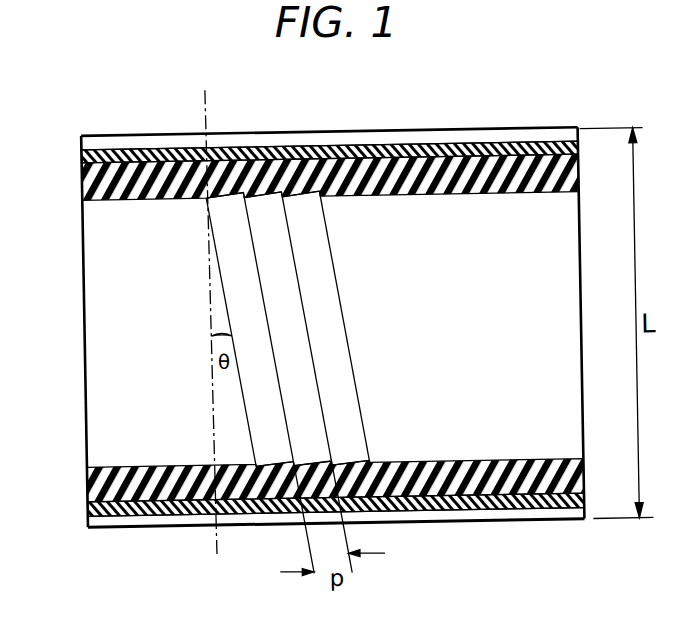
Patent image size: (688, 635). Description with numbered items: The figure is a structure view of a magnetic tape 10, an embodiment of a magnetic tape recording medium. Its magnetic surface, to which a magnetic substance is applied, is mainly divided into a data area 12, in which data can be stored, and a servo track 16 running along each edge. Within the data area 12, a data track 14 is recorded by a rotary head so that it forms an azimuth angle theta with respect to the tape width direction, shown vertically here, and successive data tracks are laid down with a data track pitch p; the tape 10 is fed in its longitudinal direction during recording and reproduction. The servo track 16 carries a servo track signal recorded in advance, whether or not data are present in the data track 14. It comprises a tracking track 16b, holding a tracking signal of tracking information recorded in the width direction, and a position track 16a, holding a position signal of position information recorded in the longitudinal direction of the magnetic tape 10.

The magnetic tape 10 is at (548, 93).
The data area 12 is at (75, 197).
The data track 14 is at (345, 317).
The servo track 16 is at (75, 146).
The position track 16a is at (318, 144).
The tracking track 16b is at (459, 196).